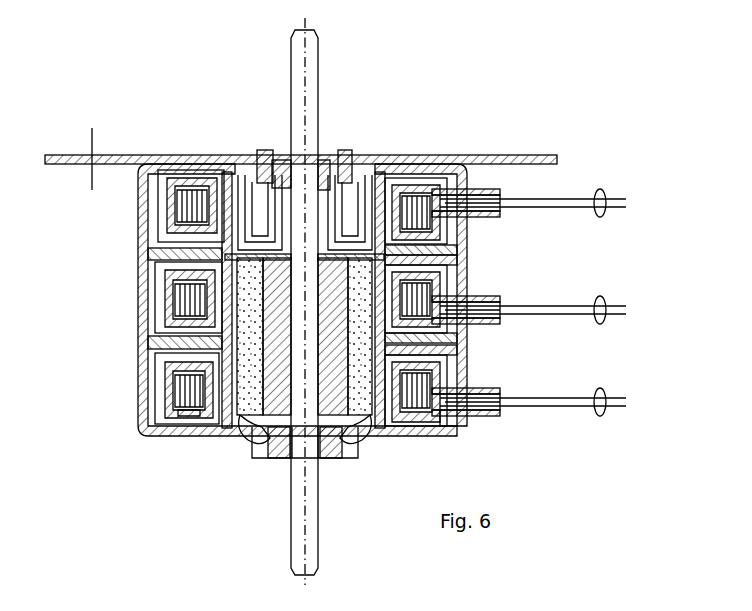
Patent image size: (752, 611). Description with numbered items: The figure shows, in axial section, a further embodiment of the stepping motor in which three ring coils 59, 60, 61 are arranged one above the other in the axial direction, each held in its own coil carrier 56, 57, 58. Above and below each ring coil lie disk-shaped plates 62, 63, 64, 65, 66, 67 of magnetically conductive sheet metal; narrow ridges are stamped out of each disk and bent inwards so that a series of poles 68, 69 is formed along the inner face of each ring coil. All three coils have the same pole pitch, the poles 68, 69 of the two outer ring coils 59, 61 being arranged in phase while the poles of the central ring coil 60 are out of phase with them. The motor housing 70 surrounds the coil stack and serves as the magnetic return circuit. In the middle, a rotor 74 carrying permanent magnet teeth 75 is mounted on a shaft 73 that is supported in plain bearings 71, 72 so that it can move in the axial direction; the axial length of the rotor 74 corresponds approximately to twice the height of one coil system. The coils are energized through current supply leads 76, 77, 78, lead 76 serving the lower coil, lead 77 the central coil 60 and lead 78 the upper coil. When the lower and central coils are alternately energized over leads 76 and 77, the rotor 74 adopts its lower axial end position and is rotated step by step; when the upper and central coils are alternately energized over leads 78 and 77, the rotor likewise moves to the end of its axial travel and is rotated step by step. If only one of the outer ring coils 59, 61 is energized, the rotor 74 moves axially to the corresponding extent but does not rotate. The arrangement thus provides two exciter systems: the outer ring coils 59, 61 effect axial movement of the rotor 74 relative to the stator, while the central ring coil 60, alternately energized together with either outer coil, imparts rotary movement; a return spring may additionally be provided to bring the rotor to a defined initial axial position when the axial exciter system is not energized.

The coil carrier 56 is at (190, 190).
The coil carrier 57 is at (148, 342).
The coil carrier 58 is at (190, 418).
The ring coil 59 is at (177, 208).
The ring coil 60 is at (173, 303).
The ring coil 61 is at (177, 395).
The disk-shaped plate 62 is at (400, 172).
The disk-shaped plate 63 is at (467, 246).
The disk-shaped plate 64 is at (467, 260).
The disk-shaped plate 65 is at (467, 340).
The disk-shaped plate 66 is at (467, 356).
The disk-shaped plate 67 is at (432, 437).
The pole 68 is at (247, 190).
The pole 69 is at (266, 165).
The motor housing 70 is at (148, 255).
The plain bearing 71 is at (330, 162).
The plain bearing 72 is at (325, 462).
The shaft 73 is at (318, 46).
The rotor 74 is at (348, 357).
The permanent magnet teeth 75 is at (248, 422).
The current supply lead 76 is at (598, 416).
The current supply lead 77 is at (598, 324).
The current supply lead 78 is at (598, 217).